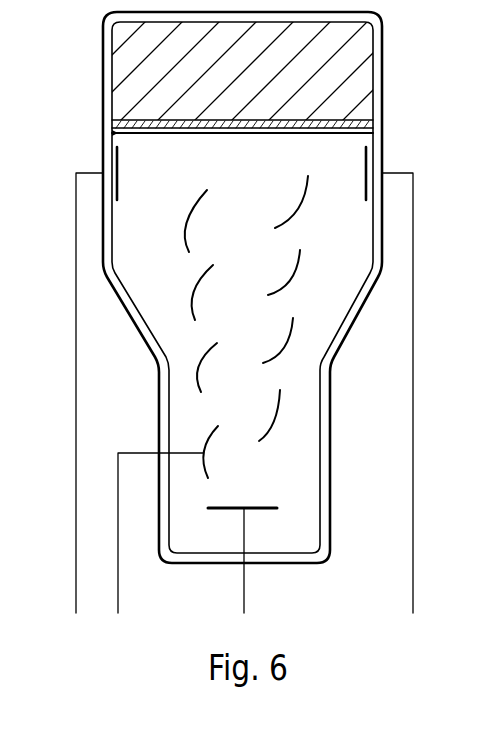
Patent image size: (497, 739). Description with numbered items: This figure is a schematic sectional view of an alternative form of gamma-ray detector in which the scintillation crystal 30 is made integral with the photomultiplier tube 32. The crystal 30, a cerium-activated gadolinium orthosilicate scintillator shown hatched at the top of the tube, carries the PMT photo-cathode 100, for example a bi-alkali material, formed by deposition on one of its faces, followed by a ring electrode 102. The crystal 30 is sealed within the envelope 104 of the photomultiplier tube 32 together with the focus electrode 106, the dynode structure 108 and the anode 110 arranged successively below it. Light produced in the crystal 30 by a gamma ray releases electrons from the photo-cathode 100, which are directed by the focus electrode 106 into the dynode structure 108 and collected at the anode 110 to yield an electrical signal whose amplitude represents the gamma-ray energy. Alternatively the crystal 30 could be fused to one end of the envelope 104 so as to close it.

The scintillation crystal 30 is at (343, 58).
The photomultiplier tube 32 is at (159, 384).
The PMT photo-cathode 100 is at (345, 118).
The ring electrode 102 is at (382, 131).
The envelope 104 is at (379, 271).
The focus electrode 106 is at (117, 183).
The dynode structure 108 is at (291, 281).
The anode 110 is at (268, 509).